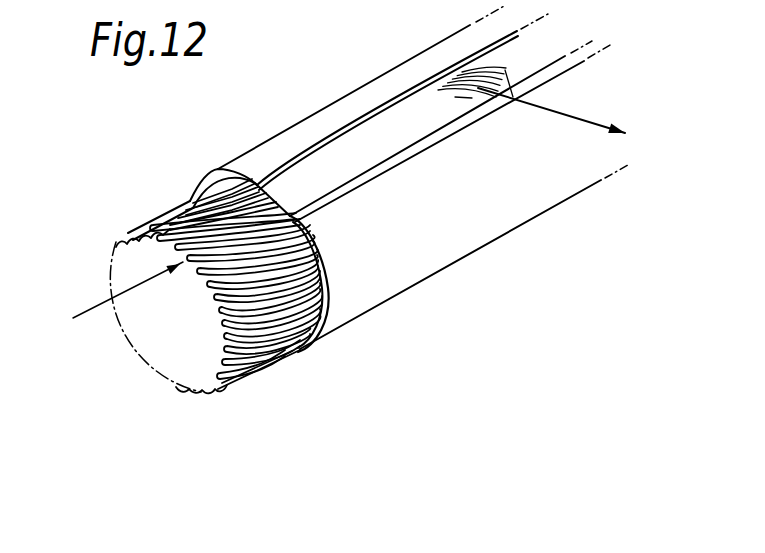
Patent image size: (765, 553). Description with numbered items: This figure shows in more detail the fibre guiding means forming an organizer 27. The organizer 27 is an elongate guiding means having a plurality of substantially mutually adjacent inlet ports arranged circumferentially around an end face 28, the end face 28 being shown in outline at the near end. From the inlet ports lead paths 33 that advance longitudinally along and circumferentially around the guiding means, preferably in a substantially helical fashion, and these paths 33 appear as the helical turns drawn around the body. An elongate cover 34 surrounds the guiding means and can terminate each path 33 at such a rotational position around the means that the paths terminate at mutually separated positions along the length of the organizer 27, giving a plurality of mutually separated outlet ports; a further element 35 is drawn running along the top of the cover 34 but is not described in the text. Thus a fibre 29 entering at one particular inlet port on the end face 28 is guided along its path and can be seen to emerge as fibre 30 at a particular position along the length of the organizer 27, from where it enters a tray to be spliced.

The organizer 27 is at (128, 215).
The end face 28 is at (160, 348).
The fibre 29 is at (84, 308).
The fibre 30 is at (580, 117).
The paths 33 is at (190, 238).
The elongate cover 34 is at (533, 187).
The longitudinal strip 35 is at (473, 72).